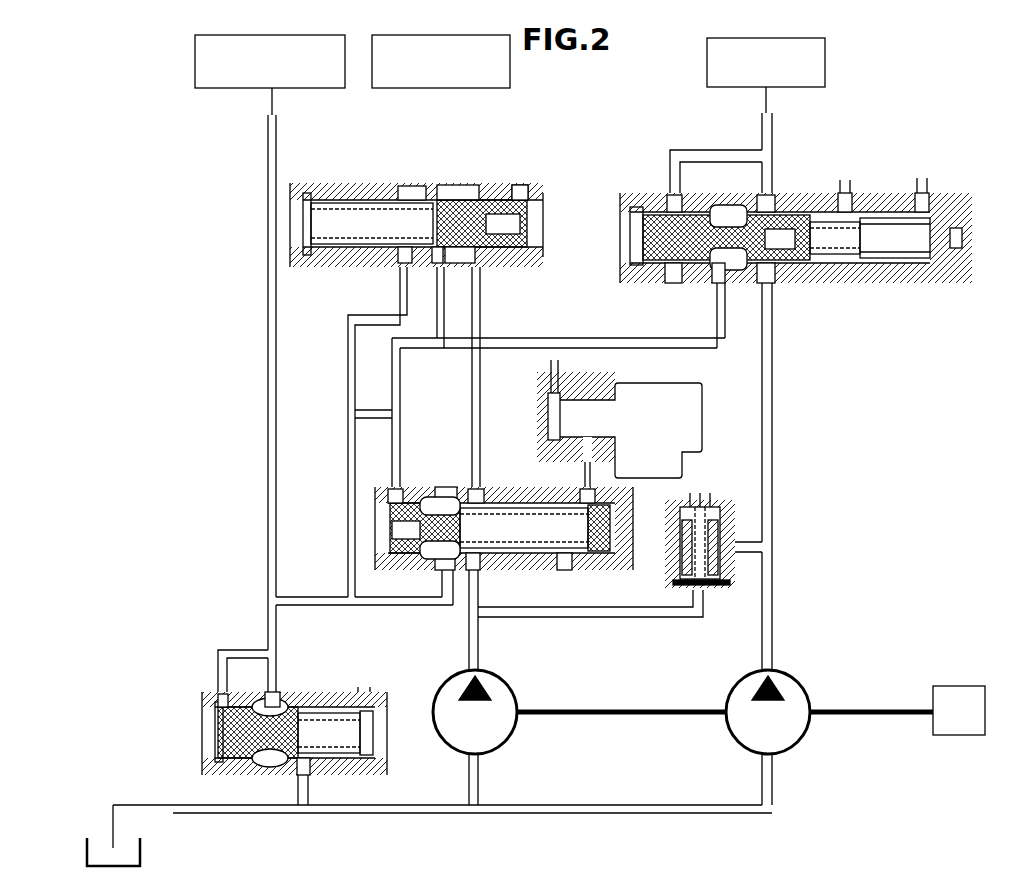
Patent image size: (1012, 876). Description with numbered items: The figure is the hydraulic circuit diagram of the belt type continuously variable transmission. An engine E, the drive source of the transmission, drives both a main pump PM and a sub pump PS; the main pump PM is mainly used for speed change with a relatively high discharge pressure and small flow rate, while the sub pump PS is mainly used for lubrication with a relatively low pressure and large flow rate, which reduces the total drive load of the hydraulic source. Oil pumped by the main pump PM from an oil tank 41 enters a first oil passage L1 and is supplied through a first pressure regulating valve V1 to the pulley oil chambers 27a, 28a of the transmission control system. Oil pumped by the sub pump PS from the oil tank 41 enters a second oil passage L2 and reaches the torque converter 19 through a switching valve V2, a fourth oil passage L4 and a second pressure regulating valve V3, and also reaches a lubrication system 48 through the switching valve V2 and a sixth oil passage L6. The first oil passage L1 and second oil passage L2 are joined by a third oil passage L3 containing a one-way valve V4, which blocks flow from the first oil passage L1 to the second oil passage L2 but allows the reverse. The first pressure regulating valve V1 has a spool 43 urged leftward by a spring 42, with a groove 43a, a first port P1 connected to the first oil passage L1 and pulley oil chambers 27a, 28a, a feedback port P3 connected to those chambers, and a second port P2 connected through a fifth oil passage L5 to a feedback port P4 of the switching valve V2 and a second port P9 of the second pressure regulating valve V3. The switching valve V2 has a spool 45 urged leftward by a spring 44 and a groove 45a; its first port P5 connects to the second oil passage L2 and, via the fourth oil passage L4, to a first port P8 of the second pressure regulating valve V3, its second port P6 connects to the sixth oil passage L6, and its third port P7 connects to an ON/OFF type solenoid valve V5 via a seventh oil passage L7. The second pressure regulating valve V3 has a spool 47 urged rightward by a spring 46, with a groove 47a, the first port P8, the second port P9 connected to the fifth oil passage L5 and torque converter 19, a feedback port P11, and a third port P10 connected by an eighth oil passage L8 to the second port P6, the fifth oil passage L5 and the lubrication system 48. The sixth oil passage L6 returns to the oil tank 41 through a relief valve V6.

The lubrication system 48 is at (290, 90).
The torque converter 19 is at (462, 90).
The pulley oil chamber 27a is at (811, 76).
The pulley oil chamber 28a is at (810, 84).
The oil tank 41 is at (86, 843).
The spring 42 is at (813, 206).
The spool 43 is at (726, 242).
The groove 43a is at (715, 203).
The spring 44 is at (570, 553).
The spool 45 is at (425, 528).
The groove 45a is at (437, 558).
The spring 46 is at (312, 196).
The spool 47 is at (482, 223).
The groove 47a is at (452, 194).
The first pressure regulating valve V1 is at (796, 226).
The switching valve V2 is at (497, 506).
The second pressure regulating valve V3 is at (440, 212).
The one-way valve V4 is at (709, 496).
The ON/OFF type solenoid valve V5 is at (668, 431).
The relief valve V6 is at (302, 690).
The sub pump PS is at (513, 682).
The main pump PM is at (808, 688).
The engine E is at (966, 723).
The first oil passage L1 is at (774, 430).
The second oil passage L2 is at (479, 582).
The third oil passage L3 is at (620, 618).
The fourth oil passage L4 is at (471, 407).
The fifth oil passage L5 is at (437, 316).
The sixth oil passage L6 is at (267, 456).
The seventh oil passage L7 is at (591, 460).
The eighth oil passage L8 is at (347, 358).
The first port P1 is at (783, 272).
The second port P2 is at (705, 270).
The feedback port P3 is at (682, 206).
The feedback port P4 is at (384, 486).
The first port P5 is at (490, 487).
The second port P6 is at (452, 487).
The third port P7 is at (574, 497).
The first port P8 is at (483, 257).
The second port P9 is at (440, 262).
The third port P10 is at (390, 254).
The feedback port P11 is at (535, 194).